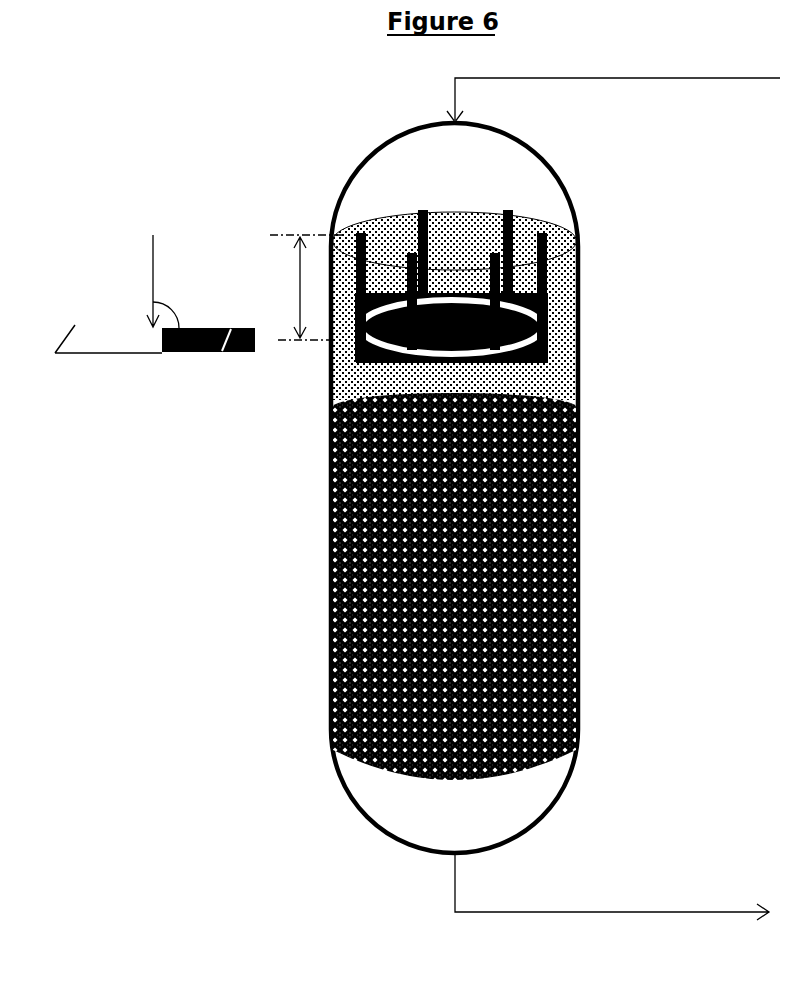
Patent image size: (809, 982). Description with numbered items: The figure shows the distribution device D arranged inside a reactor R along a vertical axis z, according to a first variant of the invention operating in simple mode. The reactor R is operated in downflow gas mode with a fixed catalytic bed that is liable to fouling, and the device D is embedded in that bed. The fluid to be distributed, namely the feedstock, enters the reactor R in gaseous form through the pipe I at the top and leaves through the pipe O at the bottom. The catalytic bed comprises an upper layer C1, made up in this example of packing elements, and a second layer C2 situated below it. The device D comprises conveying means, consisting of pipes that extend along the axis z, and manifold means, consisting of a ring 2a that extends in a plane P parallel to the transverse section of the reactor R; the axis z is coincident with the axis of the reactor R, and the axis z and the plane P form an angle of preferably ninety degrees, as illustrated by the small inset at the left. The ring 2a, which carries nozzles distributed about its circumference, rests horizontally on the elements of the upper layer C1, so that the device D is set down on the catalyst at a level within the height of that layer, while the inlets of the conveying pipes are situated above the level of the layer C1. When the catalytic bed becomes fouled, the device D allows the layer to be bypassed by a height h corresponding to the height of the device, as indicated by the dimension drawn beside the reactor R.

The reactor R is at (346, 138).
The pipe I is at (621, 93).
The pipe O is at (629, 891).
The upper layer C1 is at (599, 418).
The second layer C2 is at (599, 421).
The distribution device D is at (559, 320).
The ring 2a is at (378, 361).
The height h is at (307, 287).
The axis z is at (144, 281).